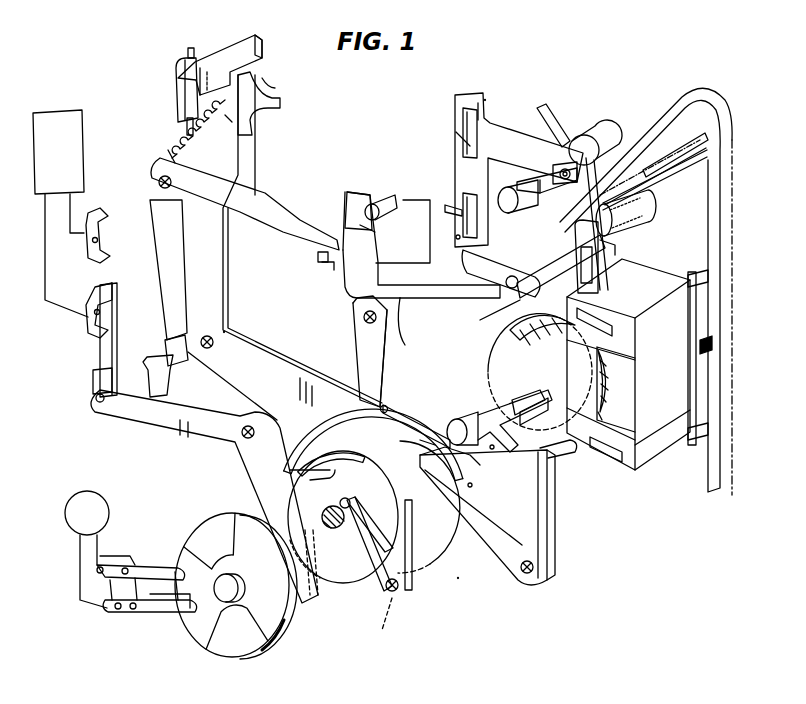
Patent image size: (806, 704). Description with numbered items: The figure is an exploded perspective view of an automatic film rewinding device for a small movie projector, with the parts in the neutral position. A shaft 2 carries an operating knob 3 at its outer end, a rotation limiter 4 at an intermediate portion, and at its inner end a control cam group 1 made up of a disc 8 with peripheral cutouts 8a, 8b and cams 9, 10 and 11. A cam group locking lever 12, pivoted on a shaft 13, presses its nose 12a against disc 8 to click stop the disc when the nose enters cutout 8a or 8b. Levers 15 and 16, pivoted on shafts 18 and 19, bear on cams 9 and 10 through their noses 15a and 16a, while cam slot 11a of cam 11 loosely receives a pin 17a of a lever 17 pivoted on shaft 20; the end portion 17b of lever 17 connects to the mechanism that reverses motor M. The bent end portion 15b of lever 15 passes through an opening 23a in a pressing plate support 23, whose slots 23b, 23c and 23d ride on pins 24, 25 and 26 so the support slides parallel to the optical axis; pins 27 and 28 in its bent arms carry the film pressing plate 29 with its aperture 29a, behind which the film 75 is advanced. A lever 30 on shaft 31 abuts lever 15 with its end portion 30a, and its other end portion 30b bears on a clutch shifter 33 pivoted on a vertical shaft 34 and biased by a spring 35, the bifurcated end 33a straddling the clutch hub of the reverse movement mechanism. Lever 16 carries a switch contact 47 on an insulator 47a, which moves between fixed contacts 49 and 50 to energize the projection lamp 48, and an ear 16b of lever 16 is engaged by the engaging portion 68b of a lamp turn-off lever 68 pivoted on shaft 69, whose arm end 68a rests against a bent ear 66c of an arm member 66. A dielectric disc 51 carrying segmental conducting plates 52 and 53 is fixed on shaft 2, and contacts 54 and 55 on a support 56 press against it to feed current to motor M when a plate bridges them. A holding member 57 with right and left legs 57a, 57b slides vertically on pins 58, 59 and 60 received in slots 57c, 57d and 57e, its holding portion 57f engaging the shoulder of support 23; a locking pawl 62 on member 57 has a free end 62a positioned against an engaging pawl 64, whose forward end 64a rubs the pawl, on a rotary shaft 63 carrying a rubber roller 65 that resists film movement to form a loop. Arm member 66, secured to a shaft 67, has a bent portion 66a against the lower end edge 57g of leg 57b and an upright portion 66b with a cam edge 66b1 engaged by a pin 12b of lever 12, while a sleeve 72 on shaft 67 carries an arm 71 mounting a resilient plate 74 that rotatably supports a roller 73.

The control cam group 1 is at (466, 580).
The shaft 2 is at (452, 432).
The operating knob 3 is at (495, 370).
The rotation limiter 4 is at (468, 416).
The disc 8 is at (415, 422).
The cutout 8a is at (340, 425).
The cutout 8b is at (386, 405).
The cam 9 is at (440, 530).
The cam 10 is at (418, 555).
The cam 11 is at (290, 470).
The cam slot 11a is at (310, 480).
The cam group locking lever 12 is at (368, 352).
The nose 12a is at (345, 440).
The pin 12b is at (395, 187).
The shaft 13 is at (362, 320).
The lever 15 is at (525, 585).
The nose 15a is at (428, 440).
The bent end portion 15b is at (548, 452).
The lever 16 is at (210, 425).
The nose 16a is at (312, 588).
The ear 16b is at (160, 358).
The lever 17 is at (395, 592).
The pin 17a is at (340, 530).
The end portion 17b is at (412, 580).
The shaft 18 is at (550, 560).
The shaft 19 is at (275, 412).
The shaft 20 is at (390, 598).
The pressing plate support 23 is at (650, 468).
The opening 23a is at (605, 410).
The slot 23b is at (600, 318).
The slot 23c is at (605, 458).
The slot 23d is at (530, 420).
The pin 24 is at (612, 358).
The pin 25 is at (618, 464).
The pin 26 is at (505, 478).
The pin 27 is at (690, 300).
The pin 28 is at (690, 440).
The film pressing plate 29 is at (698, 388).
The aperture 29a is at (710, 345).
The lever 30 is at (262, 358).
The end portion 30a is at (465, 465).
The end portion 30b is at (262, 55).
The shaft 31 is at (230, 325).
The clutch shifter 33 is at (215, 68).
The bifurcated end portion 33a is at (280, 93).
The vertical shaft 34 is at (183, 60).
The spring 35 is at (180, 138).
The switch contact 47 is at (97, 357).
The insulator 47a is at (97, 383).
The projection lamp 48 is at (72, 125).
The fixed contact 49 is at (93, 297).
The fixed contact 50 is at (103, 235).
The dielectric disc 51 is at (275, 645).
The segmental conducting plate 52 is at (190, 530).
The segmental conducting plate 53 is at (237, 645).
The contact 54 is at (152, 565).
The contact 55 is at (170, 612).
The support 56 is at (135, 620).
The holding member 57 is at (500, 133).
The right leg 57a is at (497, 290).
The left leg 57b is at (462, 160).
The slot 57c is at (600, 270).
The slot 57d is at (463, 118).
The slot 57e is at (462, 195).
The holding portion 57f is at (500, 312).
The lower end edge 57g is at (455, 240).
The pin 58 is at (612, 248).
The pin 59 is at (485, 104).
The pin 60 is at (452, 212).
The locking pawl 62 is at (598, 180).
The free end 62a is at (532, 170).
The rotary shaft 63 is at (550, 163).
The engaging pawl 64 is at (542, 193).
The forward end 64a is at (520, 218).
The rubber roller 65 is at (598, 136).
The arm member 66 is at (425, 288).
The bent portion 66a is at (410, 312).
The upright portion 66b is at (355, 193).
The cam edge 66b1 is at (362, 230).
The bent ear 66c is at (330, 268).
The shaft 67 is at (480, 262).
The lamp turn-off lever 68 is at (168, 272).
The arm end portion 68a is at (325, 247).
The engaging portion 68b is at (175, 362).
The shaft 69 is at (160, 168).
The arm 71 is at (666, 186).
The sleeve 72 is at (628, 214).
The roller 73 is at (698, 140).
The resilient plate 74 is at (652, 175).
The film 75 is at (712, 104).